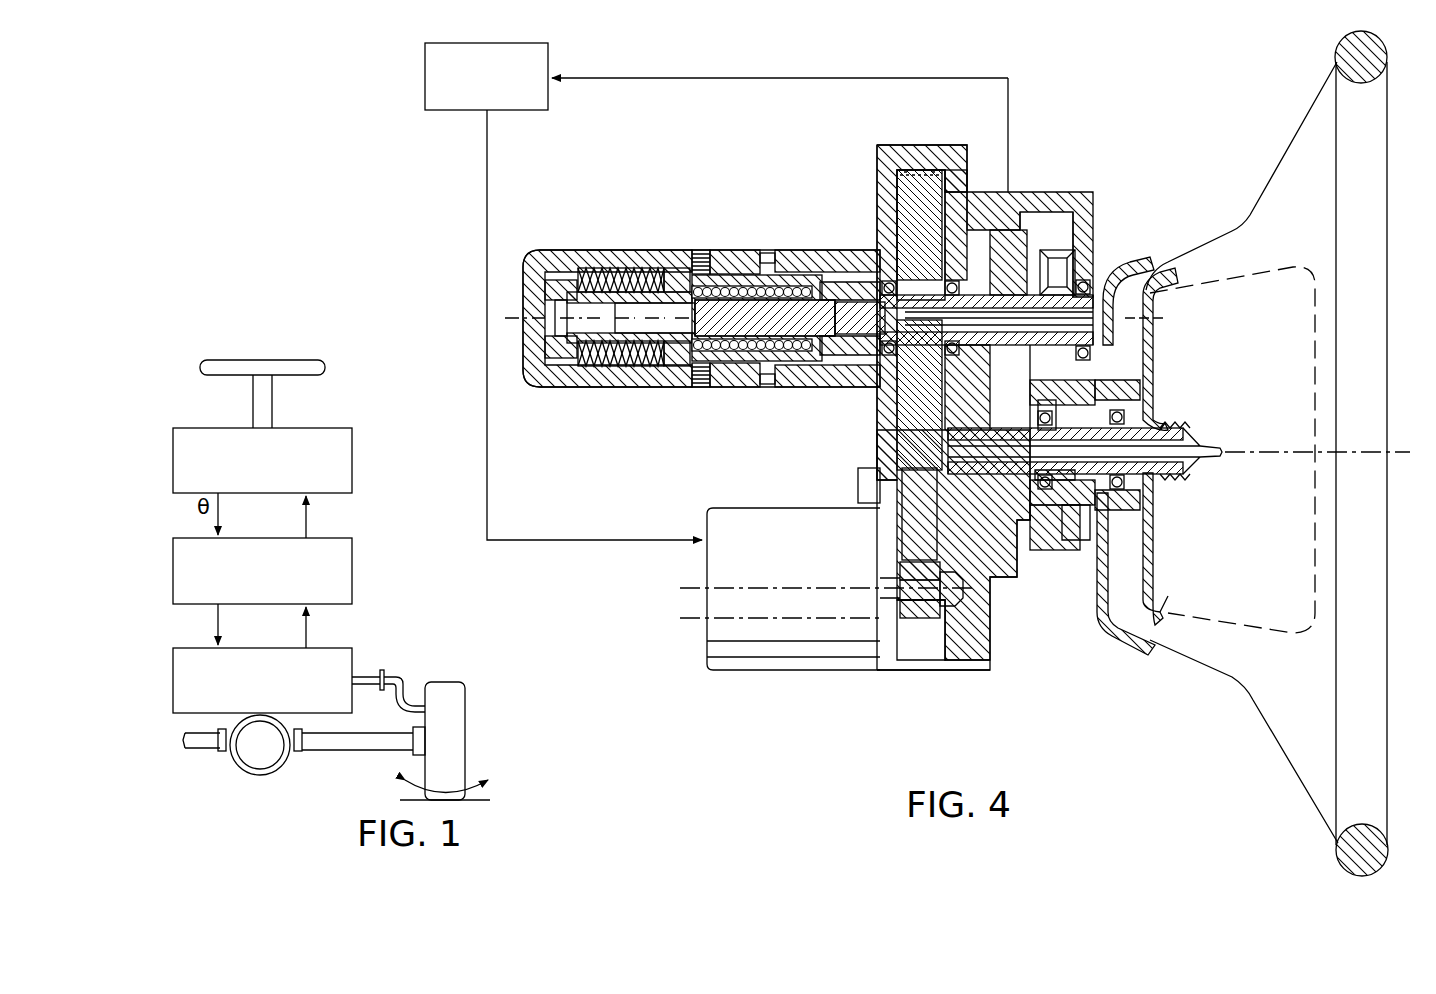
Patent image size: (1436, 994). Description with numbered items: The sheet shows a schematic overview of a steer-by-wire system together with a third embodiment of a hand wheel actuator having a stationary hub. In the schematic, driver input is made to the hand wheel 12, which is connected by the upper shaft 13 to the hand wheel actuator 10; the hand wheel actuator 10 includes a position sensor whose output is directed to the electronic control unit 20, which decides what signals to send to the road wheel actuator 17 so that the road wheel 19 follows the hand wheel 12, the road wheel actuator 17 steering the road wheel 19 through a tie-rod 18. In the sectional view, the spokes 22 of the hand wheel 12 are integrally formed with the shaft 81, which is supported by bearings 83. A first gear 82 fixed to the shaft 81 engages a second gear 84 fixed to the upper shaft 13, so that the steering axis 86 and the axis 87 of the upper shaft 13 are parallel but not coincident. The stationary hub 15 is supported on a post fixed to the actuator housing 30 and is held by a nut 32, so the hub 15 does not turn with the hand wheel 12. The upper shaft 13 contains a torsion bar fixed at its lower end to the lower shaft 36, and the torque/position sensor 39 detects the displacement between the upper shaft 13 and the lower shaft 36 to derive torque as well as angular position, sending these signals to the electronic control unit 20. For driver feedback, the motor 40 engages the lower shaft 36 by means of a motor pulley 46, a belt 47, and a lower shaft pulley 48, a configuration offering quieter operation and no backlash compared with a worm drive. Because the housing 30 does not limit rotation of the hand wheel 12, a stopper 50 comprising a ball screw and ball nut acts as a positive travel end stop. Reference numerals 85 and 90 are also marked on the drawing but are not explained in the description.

In FIG. 1, the hand wheel actuator 10 is at (352, 462).
In FIG. 4, the hand wheel actuator 10 is at (675, 682).
In FIG. 1, the hand wheel 12 is at (325, 368).
In FIG. 4, the hand wheel 12 is at (1333, 108).
In FIG. 1, the upper shaft 13 is at (272, 410).
In FIG. 4, the upper shaft 13 is at (1036, 282).
In FIG. 4, the stationary hub 15 is at (1253, 270).
In FIG. 1, the road wheel actuator 17 is at (352, 660).
In FIG. 1, the tie-rod 18 is at (412, 682).
In FIG. 1, the road wheel 19 is at (467, 705).
In FIG. 1, the electronic control unit 20 is at (352, 566).
In FIG. 4, the electronic control unit 20 is at (548, 43).
In FIG. 4, the spoke 22 is at (1135, 628).
In FIG. 4, the actuator housing 30 is at (990, 668).
In FIG. 4, the nut 32 is at (1190, 425).
In FIG. 4, the lower shaft 36 is at (870, 358).
In FIG. 4, the torque/position sensor 39 is at (1022, 240).
In FIG. 4, the motor 40 is at (705, 612).
In FIG. 4, the motor pulley 46 is at (940, 606).
In FIG. 4, the belt 47 is at (918, 503).
In FIG. 4, the lower shaft pulley 48 is at (908, 202).
In FIG. 4, the stopper 50 is at (823, 294).
In FIG. 4, the shaft 81 is at (1085, 538).
In FIG. 4, the first gear 82 is at (1050, 510).
In FIG. 4, the bearings 83 is at (1140, 488).
In FIG. 4, the second gear 84 is at (1063, 248).
In FIG. 4, the sleeve 85 is at (1107, 312).
In FIG. 4, the steering axis 86 is at (1232, 452).
In FIG. 4, the axis 87 is at (1152, 345).
In FIG. 4, the feedback actuator 90 is at (596, 212).